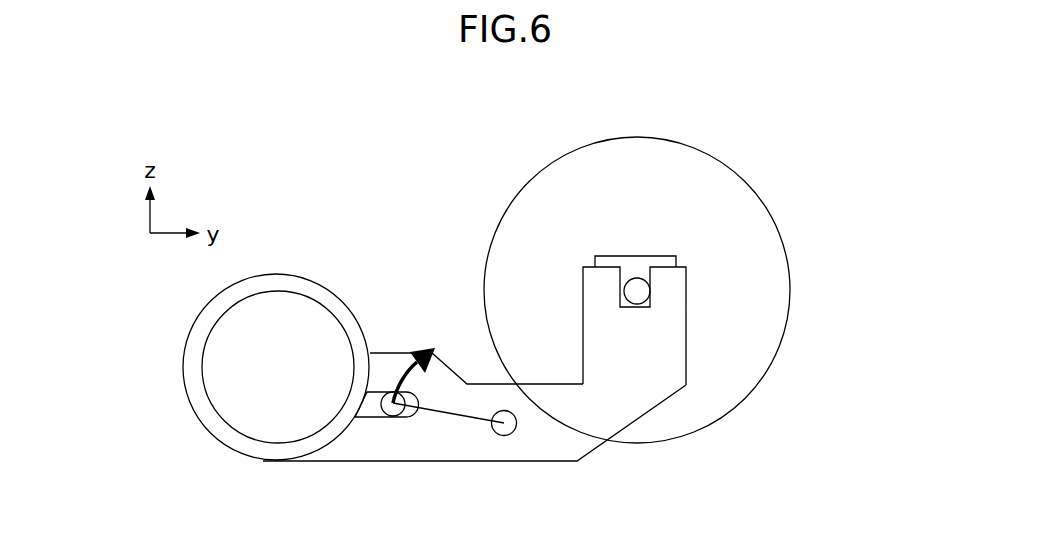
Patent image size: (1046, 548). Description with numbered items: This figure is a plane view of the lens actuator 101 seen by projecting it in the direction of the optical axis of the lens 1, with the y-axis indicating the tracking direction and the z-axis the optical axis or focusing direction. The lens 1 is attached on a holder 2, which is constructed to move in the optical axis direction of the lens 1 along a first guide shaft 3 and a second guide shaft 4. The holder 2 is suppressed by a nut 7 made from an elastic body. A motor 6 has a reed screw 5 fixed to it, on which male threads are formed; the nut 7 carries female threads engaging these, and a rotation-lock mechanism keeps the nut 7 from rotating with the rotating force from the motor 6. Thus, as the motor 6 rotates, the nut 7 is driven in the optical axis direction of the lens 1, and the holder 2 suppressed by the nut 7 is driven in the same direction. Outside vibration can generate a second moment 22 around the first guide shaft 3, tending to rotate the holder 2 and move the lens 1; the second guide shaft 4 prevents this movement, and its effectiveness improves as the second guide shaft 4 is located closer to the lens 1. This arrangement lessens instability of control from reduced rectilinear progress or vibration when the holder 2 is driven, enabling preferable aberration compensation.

The lens actuator 101 is at (352, 203).
The lens 1 is at (230, 405).
The holder 2 is at (632, 400).
The first guide shaft 3 is at (515, 430).
The second guide shaft 4 is at (400, 413).
The reed screw 5 is at (642, 292).
The motor 6 is at (768, 267).
The nut 7 is at (630, 260).
The second moment 22 is at (420, 350).